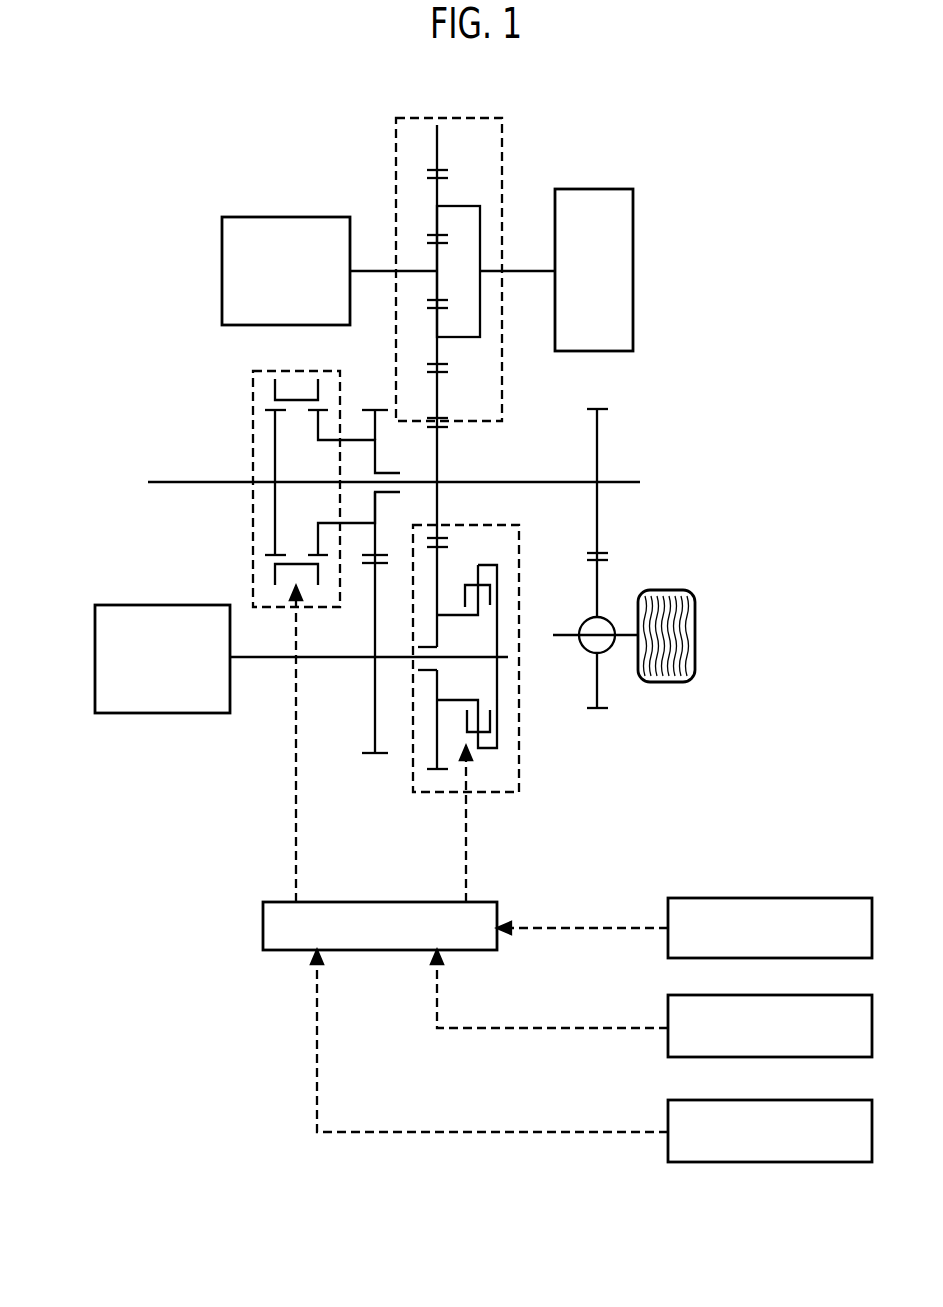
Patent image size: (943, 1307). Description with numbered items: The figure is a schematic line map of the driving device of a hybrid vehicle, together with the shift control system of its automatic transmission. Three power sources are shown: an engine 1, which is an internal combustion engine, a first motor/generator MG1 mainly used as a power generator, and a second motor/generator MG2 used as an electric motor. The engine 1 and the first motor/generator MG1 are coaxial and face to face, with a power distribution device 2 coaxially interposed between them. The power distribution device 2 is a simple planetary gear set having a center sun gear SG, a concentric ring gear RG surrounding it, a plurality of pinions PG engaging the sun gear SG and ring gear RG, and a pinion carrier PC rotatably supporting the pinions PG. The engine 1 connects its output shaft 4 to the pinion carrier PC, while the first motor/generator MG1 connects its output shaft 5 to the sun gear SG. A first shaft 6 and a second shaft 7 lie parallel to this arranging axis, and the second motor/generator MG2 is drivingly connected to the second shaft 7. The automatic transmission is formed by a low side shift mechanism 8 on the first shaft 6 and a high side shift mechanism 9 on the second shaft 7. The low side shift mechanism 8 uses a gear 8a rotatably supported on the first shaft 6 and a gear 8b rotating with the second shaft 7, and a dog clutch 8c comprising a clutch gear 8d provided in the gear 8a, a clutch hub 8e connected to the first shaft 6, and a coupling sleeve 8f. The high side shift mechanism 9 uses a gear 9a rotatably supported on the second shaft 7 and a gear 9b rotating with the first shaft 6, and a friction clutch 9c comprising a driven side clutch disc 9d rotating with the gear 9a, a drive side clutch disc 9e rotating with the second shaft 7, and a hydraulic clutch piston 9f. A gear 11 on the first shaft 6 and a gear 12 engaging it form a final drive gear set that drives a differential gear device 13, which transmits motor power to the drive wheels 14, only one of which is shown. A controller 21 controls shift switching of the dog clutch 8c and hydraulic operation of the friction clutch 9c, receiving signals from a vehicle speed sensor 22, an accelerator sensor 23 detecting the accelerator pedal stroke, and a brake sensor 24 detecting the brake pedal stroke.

The engine 1 is at (607, 189).
The power distribution device 2 is at (504, 134).
The output shaft 4 is at (525, 271).
The output shaft 5 is at (375, 271).
The first shaft 6 is at (628, 482).
The second shaft 7 is at (260, 657).
The low side shift mechanism 8 is at (289, 470).
The gear 8a is at (380, 553).
The gear 8b is at (372, 753).
The dog clutch 8c is at (266, 395).
The clutch gear 8d is at (318, 420).
The clutch hub 8e is at (272, 420).
The coupling sleeve 8f is at (275, 385).
The high side shift mechanism 9 is at (502, 664).
The gear 9a is at (437, 769).
The gear 9b is at (440, 538).
The friction clutch 9c is at (465, 586).
The driven side clutch disc 9d is at (480, 612).
The drive side clutch disc 9e is at (497, 567).
The clutch piston 9f is at (490, 590).
The gear 11 is at (597, 409).
The gear 12 is at (597, 708).
The differential gear device 13 is at (590, 652).
The drive wheels 14 is at (678, 590).
The controller 21 is at (490, 902).
The vehicle speed sensor 22 is at (790, 898).
The accelerator sensor 23 is at (790, 995).
The brake sensor 24 is at (790, 1100).
The first motor/generator MG1 is at (252, 217).
The second motor/generator MG2 is at (130, 605).
The pinions PG is at (437, 178).
The sun gear SG is at (437, 243).
The pinion carrier PC is at (468, 206).
The ring gear RG is at (440, 418).